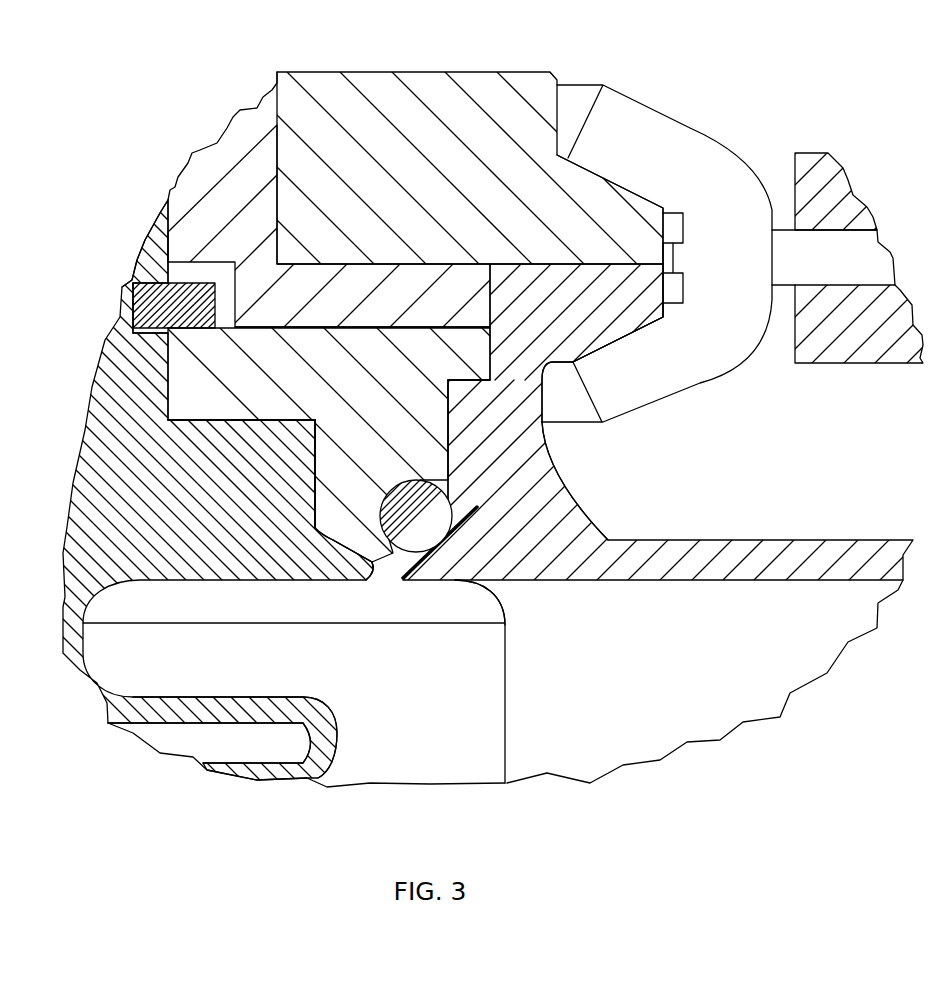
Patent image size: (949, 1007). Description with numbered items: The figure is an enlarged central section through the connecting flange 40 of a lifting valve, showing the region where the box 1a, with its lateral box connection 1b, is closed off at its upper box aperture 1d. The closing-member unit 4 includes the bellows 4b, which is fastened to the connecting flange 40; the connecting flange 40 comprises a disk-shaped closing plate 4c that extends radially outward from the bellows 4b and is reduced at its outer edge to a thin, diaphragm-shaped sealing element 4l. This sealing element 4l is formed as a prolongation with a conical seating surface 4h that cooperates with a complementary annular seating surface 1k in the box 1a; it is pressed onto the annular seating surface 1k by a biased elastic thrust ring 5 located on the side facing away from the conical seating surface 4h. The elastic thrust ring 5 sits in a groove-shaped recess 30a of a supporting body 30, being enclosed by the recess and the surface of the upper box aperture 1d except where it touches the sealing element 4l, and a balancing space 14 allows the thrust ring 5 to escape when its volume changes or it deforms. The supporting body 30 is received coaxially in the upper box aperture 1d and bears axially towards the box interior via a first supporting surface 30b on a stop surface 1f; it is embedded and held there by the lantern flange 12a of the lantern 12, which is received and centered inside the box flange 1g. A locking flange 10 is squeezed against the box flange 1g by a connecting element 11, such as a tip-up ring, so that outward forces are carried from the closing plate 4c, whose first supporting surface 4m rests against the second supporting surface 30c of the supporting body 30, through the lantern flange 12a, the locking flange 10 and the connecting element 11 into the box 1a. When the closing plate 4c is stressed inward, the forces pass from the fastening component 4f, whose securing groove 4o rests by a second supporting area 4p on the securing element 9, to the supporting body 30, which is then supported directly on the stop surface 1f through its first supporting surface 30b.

The box 1a is at (441, 713).
The lateral box connection 1b is at (806, 547).
The upper box aperture 1d is at (453, 458).
The stop surface 1f is at (472, 380).
The box flange 1g is at (617, 314).
The annular seating surface 1k is at (462, 581).
The closing-member unit 4 is at (242, 778).
The bellows 4b is at (332, 753).
The closing plate 4c is at (172, 549).
The fastening component 4f is at (130, 273).
The conical seating surface 4h is at (417, 582).
The diaphragm-shaped sealing element 4l is at (443, 538).
The first supporting surface 4m is at (289, 417).
The securing groove 4o is at (130, 332).
The second supporting area 4p is at (160, 270).
The elastic thrust ring 5 is at (416, 481).
The securing element 9 is at (197, 292).
The locking flange 10 is at (420, 77).
The connecting element 11 is at (628, 108).
The lantern 12 is at (233, 167).
The lantern flange 12a is at (360, 298).
The balancing space 14 is at (480, 504).
The supporting body 30 is at (197, 393).
The groove-shaped recess 30a is at (368, 578).
The first supporting surface 30b is at (546, 424).
The second supporting surface 30c is at (267, 423).
The connecting flange 40 is at (135, 481).